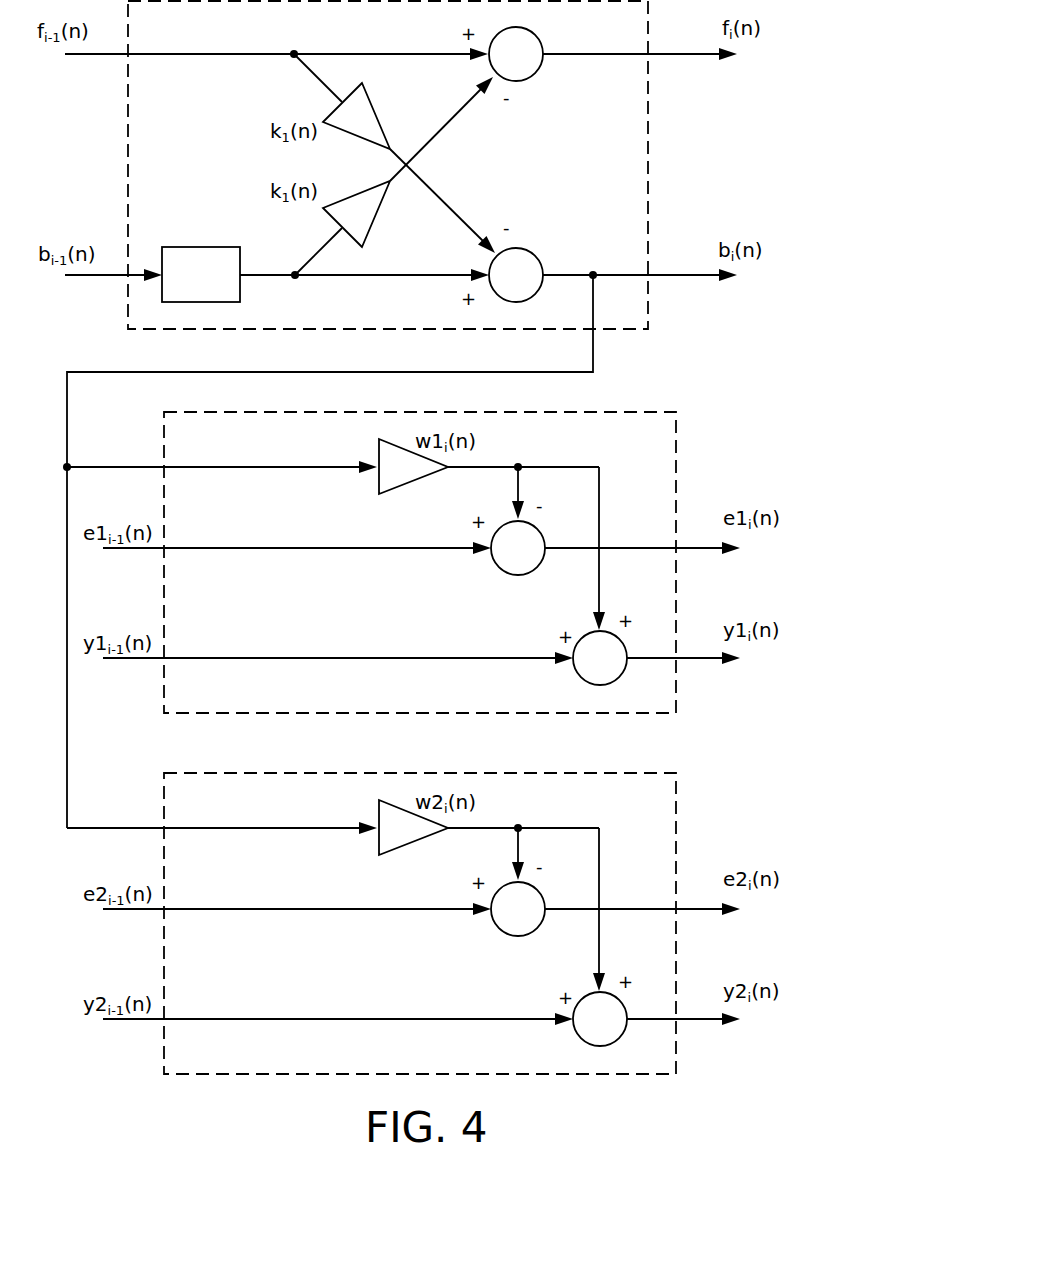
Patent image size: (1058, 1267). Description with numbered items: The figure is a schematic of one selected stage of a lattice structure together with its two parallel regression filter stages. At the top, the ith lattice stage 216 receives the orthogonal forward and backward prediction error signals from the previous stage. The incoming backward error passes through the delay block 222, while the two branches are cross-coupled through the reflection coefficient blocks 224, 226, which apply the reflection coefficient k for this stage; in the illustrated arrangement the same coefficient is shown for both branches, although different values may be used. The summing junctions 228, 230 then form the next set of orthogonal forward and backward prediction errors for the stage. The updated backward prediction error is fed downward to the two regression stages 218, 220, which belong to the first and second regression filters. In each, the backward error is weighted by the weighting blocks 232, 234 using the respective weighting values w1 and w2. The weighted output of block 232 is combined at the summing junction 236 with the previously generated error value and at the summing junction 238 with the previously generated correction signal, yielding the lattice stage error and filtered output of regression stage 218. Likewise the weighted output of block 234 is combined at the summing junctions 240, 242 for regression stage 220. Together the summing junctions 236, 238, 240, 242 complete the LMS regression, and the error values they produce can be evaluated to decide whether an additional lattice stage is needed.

The lattice stage 216 is at (650, 147).
The regression stage 218 is at (678, 445).
The regression stage 220 is at (678, 806).
The delay block 222 is at (203, 247).
The reflection coefficient block 224 is at (375, 112).
The reflection coefficient block 226 is at (375, 225).
The summing junction 228 is at (538, 72).
The summing junction 230 is at (540, 256).
The weighting block 232 is at (400, 487).
The weighting block 234 is at (400, 848).
The summing junction 236 is at (503, 572).
The summing junction 238 is at (575, 680).
The summing junction 240 is at (503, 933).
The summing junction 242 is at (575, 1041).